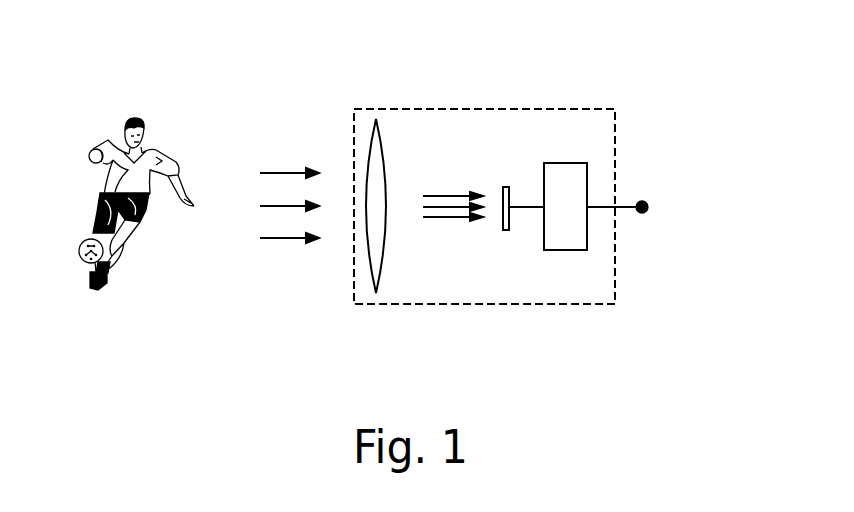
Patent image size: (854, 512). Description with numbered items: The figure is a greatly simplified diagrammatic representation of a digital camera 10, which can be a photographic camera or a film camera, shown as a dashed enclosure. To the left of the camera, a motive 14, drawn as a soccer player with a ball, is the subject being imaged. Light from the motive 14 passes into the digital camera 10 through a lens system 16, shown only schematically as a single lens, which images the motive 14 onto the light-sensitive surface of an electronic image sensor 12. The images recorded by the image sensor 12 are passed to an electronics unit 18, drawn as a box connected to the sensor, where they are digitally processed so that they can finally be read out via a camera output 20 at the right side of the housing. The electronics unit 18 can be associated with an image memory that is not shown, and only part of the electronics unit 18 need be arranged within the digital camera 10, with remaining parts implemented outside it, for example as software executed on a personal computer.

The digital camera 10 is at (477, 108).
The electronic image sensor 12 is at (507, 190).
The motive 14 is at (160, 143).
The lens system 16 is at (375, 157).
The electronics unit 18 is at (562, 245).
The camera output 20 is at (647, 213).